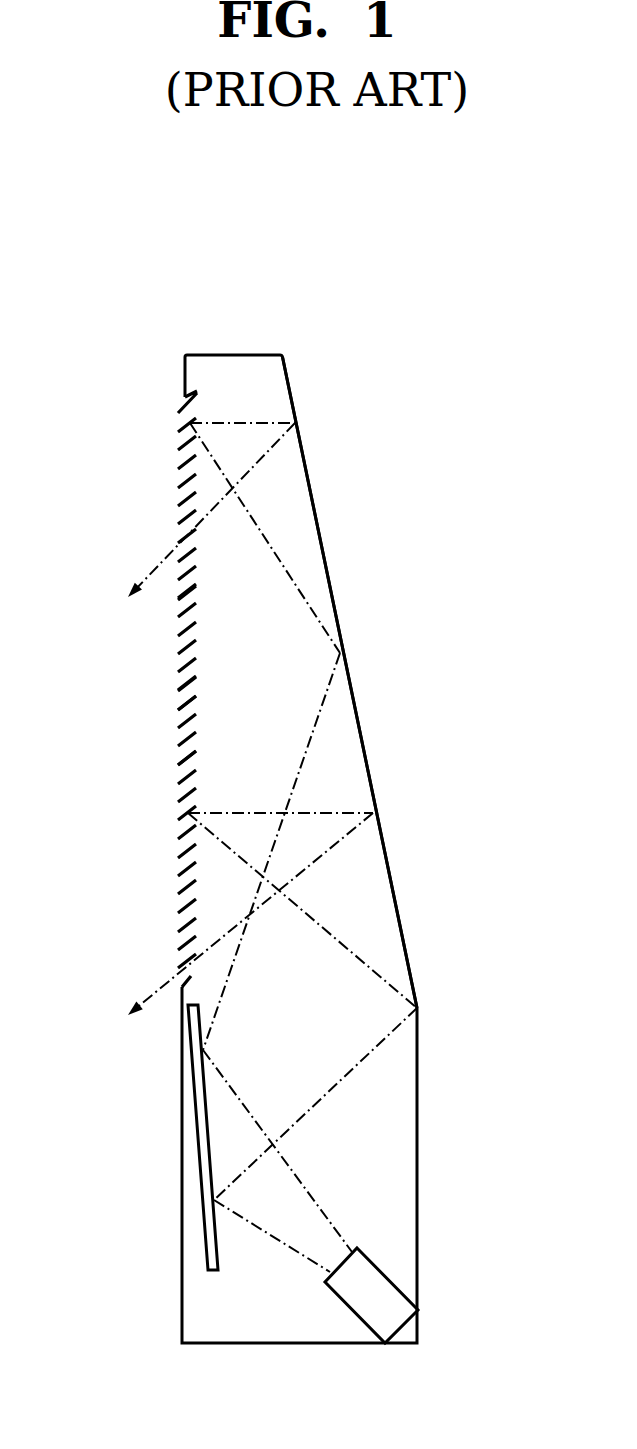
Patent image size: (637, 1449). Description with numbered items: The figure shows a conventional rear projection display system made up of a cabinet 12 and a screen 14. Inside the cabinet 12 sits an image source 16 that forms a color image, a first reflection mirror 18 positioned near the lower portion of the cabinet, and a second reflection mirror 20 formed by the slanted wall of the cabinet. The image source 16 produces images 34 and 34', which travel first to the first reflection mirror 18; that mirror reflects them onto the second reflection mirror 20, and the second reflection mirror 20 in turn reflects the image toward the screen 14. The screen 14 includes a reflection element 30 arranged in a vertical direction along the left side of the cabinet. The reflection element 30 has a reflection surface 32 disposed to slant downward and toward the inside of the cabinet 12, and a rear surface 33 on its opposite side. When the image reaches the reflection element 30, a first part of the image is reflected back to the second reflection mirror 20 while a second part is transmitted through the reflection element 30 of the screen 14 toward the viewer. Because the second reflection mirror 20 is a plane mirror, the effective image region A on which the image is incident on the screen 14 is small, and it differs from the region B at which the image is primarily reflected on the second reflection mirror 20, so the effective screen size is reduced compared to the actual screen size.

The cabinet 12 is at (232, 355).
The screen 14 is at (160, 490).
The image source 16 is at (373, 1297).
The first reflection mirror 18 is at (197, 1135).
The second reflection mirror 20 is at (362, 767).
The reflection element 30 is at (160, 778).
The reflection surface 32 is at (178, 692).
The rear surface 33 is at (178, 692).
The image 34 is at (299, 1151).
The image 34' is at (217, 1268).
The effective image region A is at (82, 1020).
The region at which the image is primarily reflected B is at (155, 800).